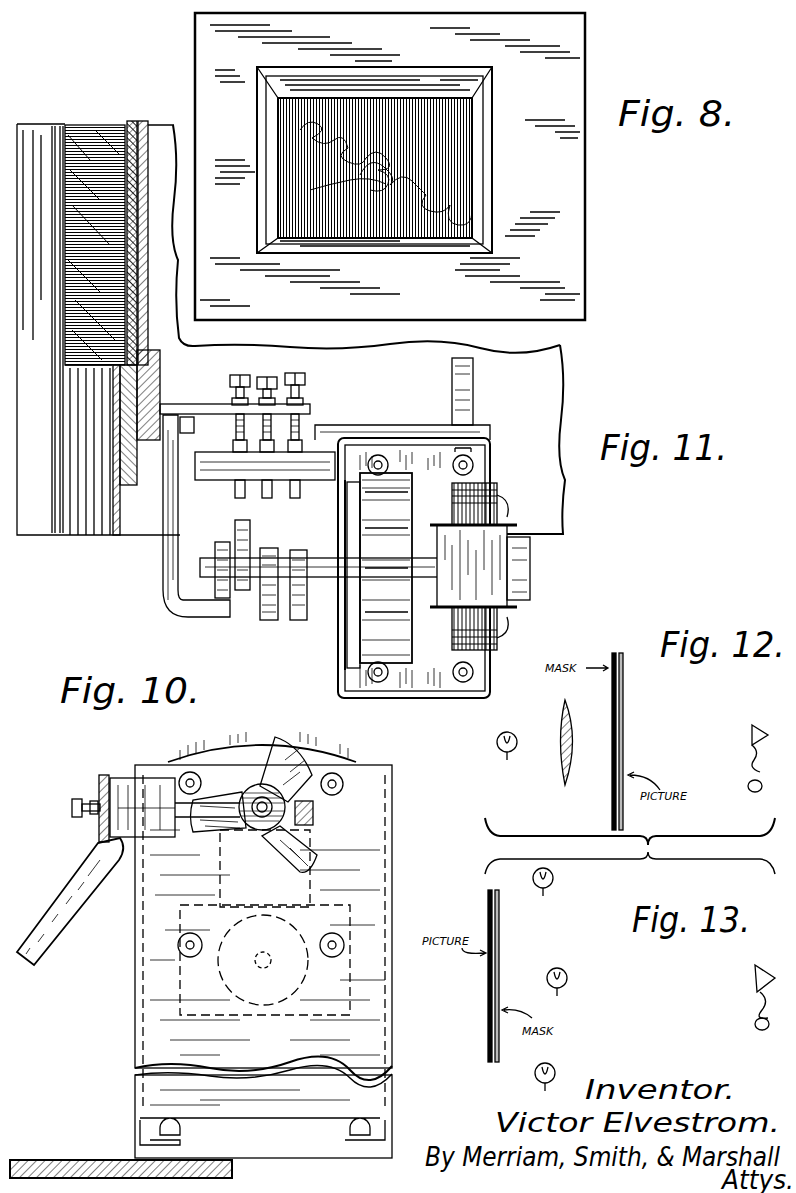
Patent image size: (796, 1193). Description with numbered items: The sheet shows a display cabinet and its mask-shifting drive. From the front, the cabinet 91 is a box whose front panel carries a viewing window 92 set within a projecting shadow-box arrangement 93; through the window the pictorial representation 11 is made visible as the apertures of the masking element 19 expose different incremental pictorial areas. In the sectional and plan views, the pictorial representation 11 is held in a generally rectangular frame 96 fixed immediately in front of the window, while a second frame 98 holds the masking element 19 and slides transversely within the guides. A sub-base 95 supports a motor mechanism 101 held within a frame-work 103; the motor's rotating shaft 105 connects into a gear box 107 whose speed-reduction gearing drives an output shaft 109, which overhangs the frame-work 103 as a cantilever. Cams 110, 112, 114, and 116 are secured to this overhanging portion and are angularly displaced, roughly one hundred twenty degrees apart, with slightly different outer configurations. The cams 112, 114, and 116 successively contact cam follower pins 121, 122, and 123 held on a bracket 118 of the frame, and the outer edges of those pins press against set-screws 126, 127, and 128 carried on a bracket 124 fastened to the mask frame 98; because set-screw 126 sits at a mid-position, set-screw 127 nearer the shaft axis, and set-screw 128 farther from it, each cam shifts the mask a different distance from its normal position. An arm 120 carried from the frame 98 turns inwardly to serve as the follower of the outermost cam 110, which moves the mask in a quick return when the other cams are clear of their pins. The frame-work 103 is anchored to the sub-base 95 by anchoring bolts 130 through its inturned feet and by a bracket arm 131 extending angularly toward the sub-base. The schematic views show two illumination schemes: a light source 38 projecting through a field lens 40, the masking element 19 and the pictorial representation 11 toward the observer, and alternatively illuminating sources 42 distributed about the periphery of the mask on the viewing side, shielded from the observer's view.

In FIG. 11, the pictorial representation 11 is at (132, 120).
In FIG. 12, the pictorial representation 11 is at (623, 697).
In FIG. 13, the pictorial representation 11 is at (487, 900).
In FIG. 11, the masking element 19 is at (143, 120).
In FIG. 12, the masking element 19 is at (610, 803).
In FIG. 13, the masking element 19 is at (500, 1042).
In FIG. 12, the light source 38 is at (517, 748).
In FIG. 12, the field lens 40 is at (566, 718).
In FIG. 13, the illuminating sources 42 is at (554, 878).
In FIG. 8, the cabinet 91 is at (572, 262).
In FIG. 11, the cabinet 91 is at (47, 530).
In FIG. 8, the viewing window 92 is at (418, 226).
In FIG. 11, the viewing window 92 is at (80, 128).
In FIG. 8, the shadow-box arrangement 93 is at (348, 244).
In FIG. 11, the shadow-box arrangement 93 is at (75, 370).
In FIG. 11, the sub-base 95 is at (562, 394).
In FIG. 10, the sub-base 95 is at (66, 1158).
In FIG. 11, the frame 96 is at (130, 484).
In FIG. 11, the second frame 98 is at (160, 392).
In FIG. 11, the motor mechanism 101 is at (532, 600).
In FIG. 10, the motor mechanism 101 is at (310, 960).
In FIG. 11, the frame-work 103 is at (430, 692).
In FIG. 10, the frame-work 103 is at (372, 1043).
In FIG. 11, the rotating shaft 105 is at (410, 602).
In FIG. 10, the rotating shaft 105 is at (250, 985).
In FIG. 11, the gear box 107 is at (352, 612).
In FIG. 10, the gear box 107 is at (335, 758).
In FIG. 11, the output shaft 109 is at (322, 595).
In FIG. 10, the output shaft 109 is at (290, 803).
In FIG. 11, the cam 110 is at (234, 540).
In FIG. 10, the cam 110 is at (245, 828).
In FIG. 11, the cam 112 is at (236, 600).
In FIG. 10, the cam 112 is at (240, 790).
In FIG. 11, the cam 114 is at (276, 550).
In FIG. 10, the cam 114 is at (280, 832).
In FIG. 11, the cam 116 is at (300, 548).
In FIG. 10, the cam 116 is at (282, 750).
In FIG. 11, the bracket 118 is at (336, 428).
In FIG. 11, the arm 120 is at (165, 572).
In FIG. 10, the arm 120 is at (320, 810).
In FIG. 11, the cam follower pin 121 is at (232, 490).
In FIG. 10, the cam follower pin 121 is at (178, 782).
In FIG. 11, the cam follower pin 122 is at (268, 496).
In FIG. 11, the cam follower pin 123 is at (300, 490).
In FIG. 11, the bracket 124 is at (208, 400).
In FIG. 10, the bracket 124 is at (105, 774).
In FIG. 11, the set-screw 126 is at (246, 382).
In FIG. 10, the set-screw 126 is at (72, 806).
In FIG. 11, the set-screw 127 is at (275, 384).
In FIG. 11, the set-screw 128 is at (304, 384).
In FIG. 11, the anchoring bolts 130 is at (385, 455).
In FIG. 10, the anchoring bolts 130 is at (150, 1122).
In FIG. 11, the bracket arm 131 is at (474, 388).
In FIG. 10, the bracket arm 131 is at (58, 886).